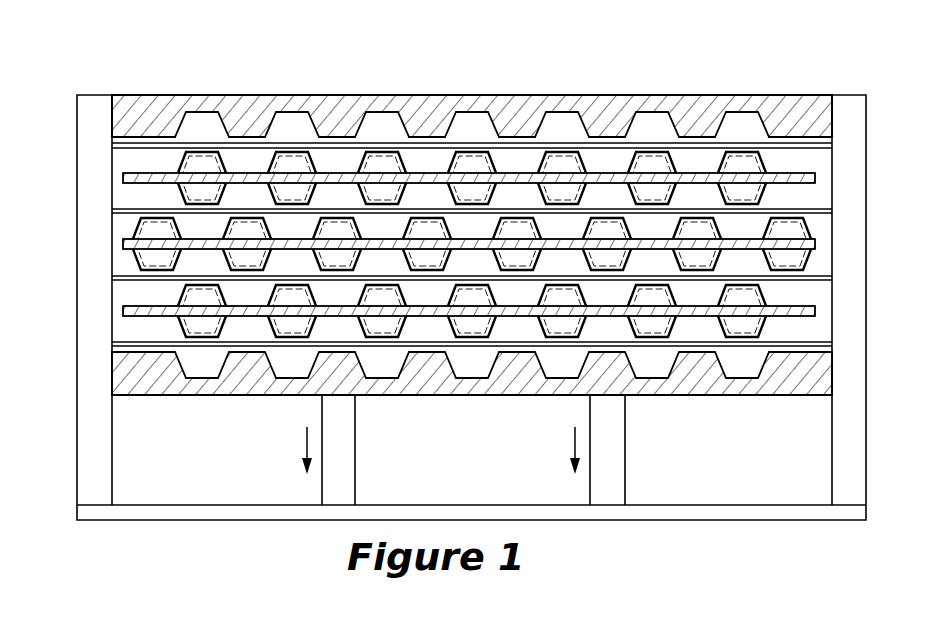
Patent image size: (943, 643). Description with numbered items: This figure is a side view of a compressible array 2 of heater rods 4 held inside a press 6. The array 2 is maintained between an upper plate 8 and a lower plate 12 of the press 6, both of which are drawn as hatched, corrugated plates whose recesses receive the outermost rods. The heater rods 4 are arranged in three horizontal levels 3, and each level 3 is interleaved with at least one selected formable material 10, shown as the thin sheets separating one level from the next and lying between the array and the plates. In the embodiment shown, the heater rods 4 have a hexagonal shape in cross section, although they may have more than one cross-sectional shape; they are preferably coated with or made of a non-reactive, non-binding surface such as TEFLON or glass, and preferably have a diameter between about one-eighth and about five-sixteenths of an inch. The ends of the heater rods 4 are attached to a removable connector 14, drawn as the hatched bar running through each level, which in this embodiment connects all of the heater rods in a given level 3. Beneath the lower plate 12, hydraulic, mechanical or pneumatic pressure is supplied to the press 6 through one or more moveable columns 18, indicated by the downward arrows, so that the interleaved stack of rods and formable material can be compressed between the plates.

The compressible array 2 is at (167, 337).
The level 3 is at (120, 268).
The heater rod 4 is at (290, 166).
The press 6 is at (492, 81).
The upper plate 8 is at (610, 112).
The formable material 10 is at (810, 147).
The lower plate 12 is at (789, 380).
The removable connector 14 is at (683, 178).
The moveable column 18 is at (332, 447).